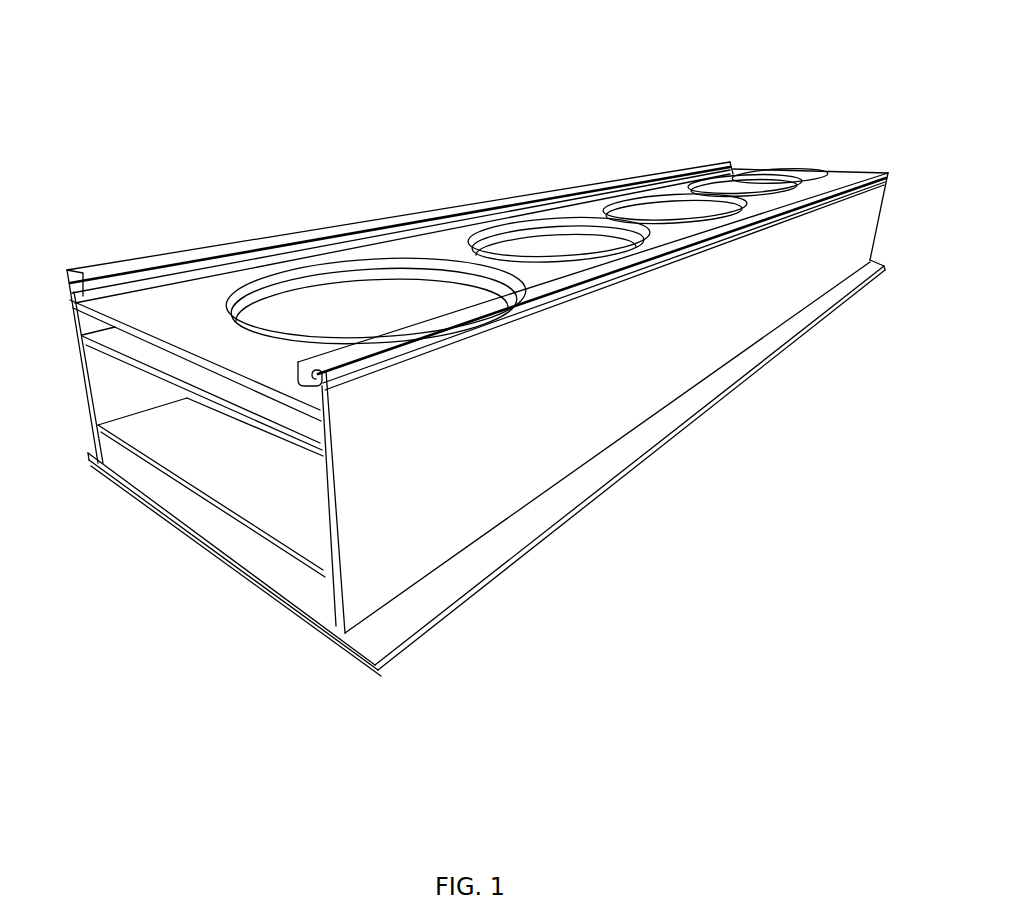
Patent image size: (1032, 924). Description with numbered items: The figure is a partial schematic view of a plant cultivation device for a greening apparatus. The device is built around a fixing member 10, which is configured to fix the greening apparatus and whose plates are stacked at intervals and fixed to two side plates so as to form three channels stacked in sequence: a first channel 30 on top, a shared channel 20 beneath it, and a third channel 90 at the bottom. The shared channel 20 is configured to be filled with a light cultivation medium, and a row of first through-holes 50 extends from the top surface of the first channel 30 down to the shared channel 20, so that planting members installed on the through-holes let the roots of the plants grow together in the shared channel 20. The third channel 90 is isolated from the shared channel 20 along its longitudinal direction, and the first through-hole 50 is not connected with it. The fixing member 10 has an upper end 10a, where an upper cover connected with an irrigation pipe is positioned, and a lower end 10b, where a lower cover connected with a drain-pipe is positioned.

The fixing member 10 is at (462, 488).
The upper end 10a is at (453, 320).
The lower end 10b is at (90, 460).
The shared channel 20 is at (207, 450).
The first channel 30 is at (257, 403).
The first through-hole 50 is at (357, 302).
The third channel 90 is at (300, 578).